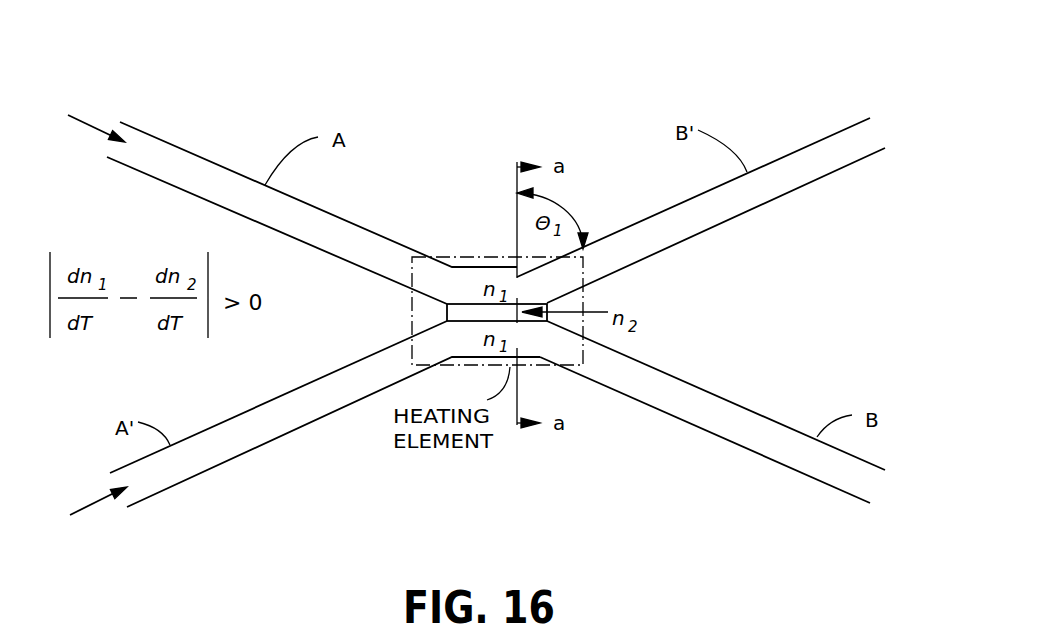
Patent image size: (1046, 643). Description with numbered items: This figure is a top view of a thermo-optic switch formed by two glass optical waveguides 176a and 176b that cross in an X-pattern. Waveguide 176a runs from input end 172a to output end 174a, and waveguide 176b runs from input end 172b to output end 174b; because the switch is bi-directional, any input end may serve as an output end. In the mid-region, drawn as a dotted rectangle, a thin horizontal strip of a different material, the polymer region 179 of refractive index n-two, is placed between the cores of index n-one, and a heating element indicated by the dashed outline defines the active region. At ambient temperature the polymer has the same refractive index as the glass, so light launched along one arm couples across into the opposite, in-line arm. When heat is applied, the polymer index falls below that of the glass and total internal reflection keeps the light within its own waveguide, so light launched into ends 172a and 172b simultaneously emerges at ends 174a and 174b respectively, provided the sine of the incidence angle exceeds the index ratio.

The input end 172a is at (120, 130).
The input end 172b is at (125, 498).
The output end 174a is at (868, 138).
The output end 174b is at (868, 480).
The optical waveguide 176a is at (168, 142).
The optical waveguide 176b is at (203, 473).
The polymer region 179 is at (447, 309).